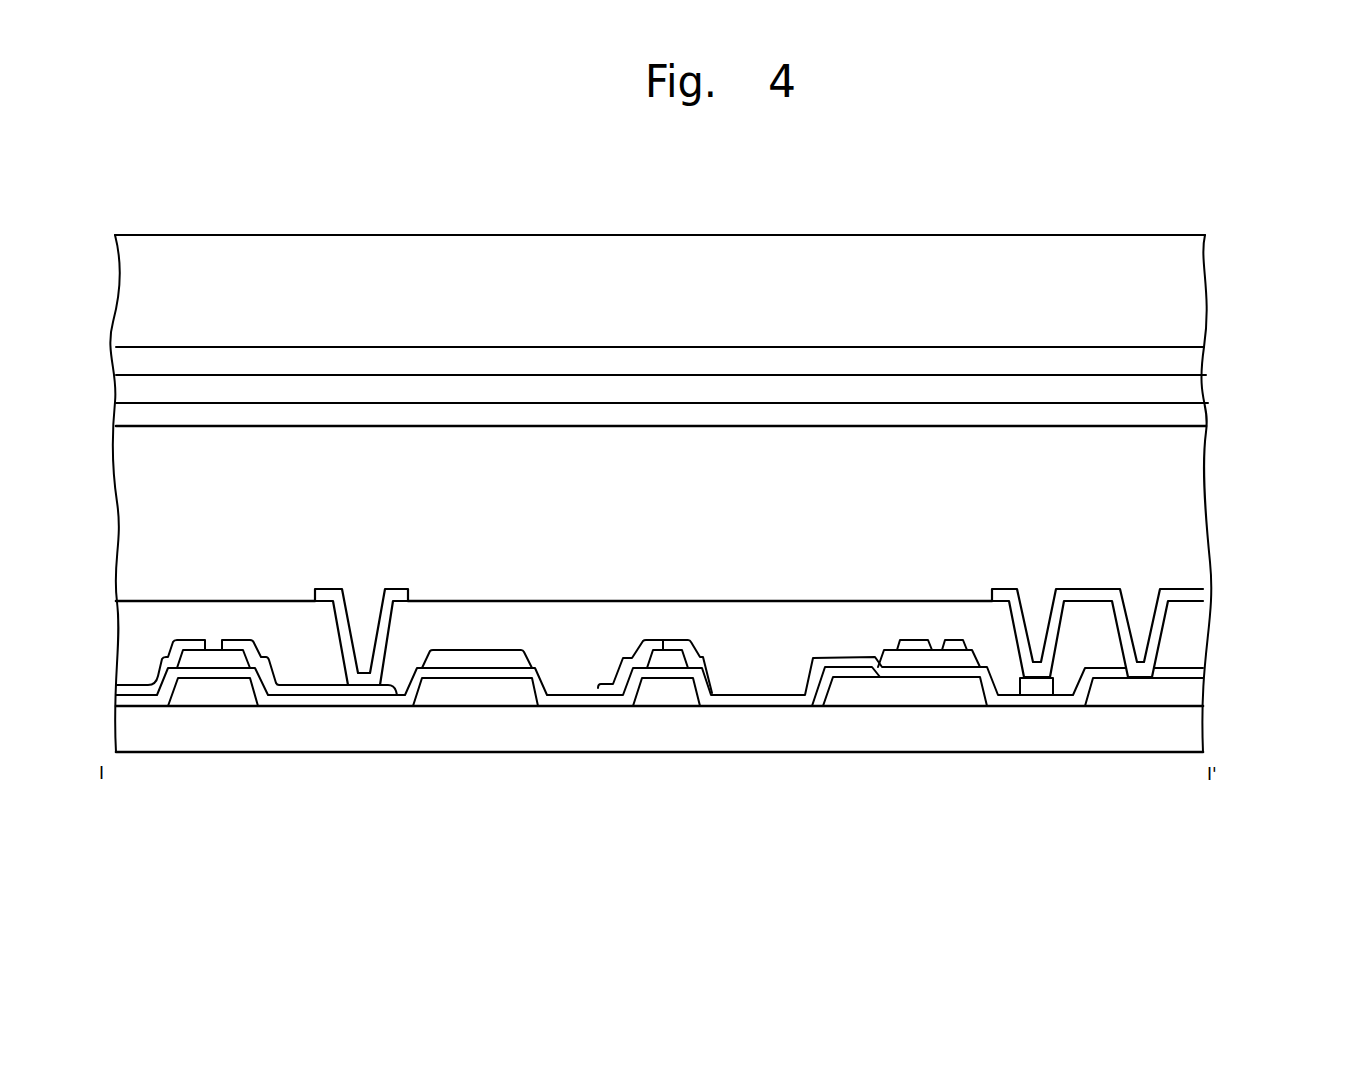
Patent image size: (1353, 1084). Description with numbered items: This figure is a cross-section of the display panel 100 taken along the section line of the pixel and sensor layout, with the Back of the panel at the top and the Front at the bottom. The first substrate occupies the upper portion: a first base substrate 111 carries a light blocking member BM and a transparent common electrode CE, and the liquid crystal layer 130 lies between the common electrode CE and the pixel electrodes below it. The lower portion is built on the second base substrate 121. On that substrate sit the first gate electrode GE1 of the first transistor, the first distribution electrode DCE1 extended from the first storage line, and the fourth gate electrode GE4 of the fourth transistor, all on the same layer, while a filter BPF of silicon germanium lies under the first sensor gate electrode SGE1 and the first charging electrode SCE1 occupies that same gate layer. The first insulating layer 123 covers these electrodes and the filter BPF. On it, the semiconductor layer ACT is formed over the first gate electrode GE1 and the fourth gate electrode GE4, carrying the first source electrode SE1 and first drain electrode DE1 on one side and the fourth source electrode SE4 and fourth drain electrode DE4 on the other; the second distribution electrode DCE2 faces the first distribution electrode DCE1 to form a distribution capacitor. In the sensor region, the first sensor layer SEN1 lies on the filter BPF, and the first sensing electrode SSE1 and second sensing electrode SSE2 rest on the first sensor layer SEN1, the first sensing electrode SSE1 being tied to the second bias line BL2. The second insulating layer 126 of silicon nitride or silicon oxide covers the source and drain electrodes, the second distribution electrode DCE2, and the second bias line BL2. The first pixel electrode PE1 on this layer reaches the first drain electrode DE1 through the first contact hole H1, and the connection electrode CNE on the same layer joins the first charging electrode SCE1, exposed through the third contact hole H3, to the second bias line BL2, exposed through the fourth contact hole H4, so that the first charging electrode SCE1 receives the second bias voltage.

The display panel 100 is at (1293, 348).
The first base substrate 111 is at (1200, 362).
The light blocking member BM is at (1200, 389).
The common electrode CE is at (1200, 414).
The liquid crystal layer 130 is at (1200, 521).
The back side direction Back is at (1172, 345).
The front side direction Front is at (1137, 755).
The connection electrode CNE is at (1200, 595).
The first pixel electrode PE1 is at (402, 594).
The second insulating layer 126 is at (1200, 634).
The first insulating layer 123 is at (1200, 672).
The second bias line BL2 is at (1200, 696).
The second base substrate 121 is at (1200, 727).
The first contact hole H1 is at (364, 600).
The third contact hole H3 is at (1037, 599).
The fourth contact hole H4 is at (1141, 599).
The first gate electrode GE1 is at (232, 695).
The semiconductor layer ACT is at (197, 657).
The first source electrode SE1 is at (138, 690).
The first drain electrode DE1 is at (297, 690).
The first distribution electrode DCE1 is at (447, 695).
The second distribution electrode DCE2 is at (497, 660).
The fourth gate electrode GE4 is at (653, 693).
The fourth drain electrode DE4 is at (608, 690).
The fourth source electrode SE4 is at (690, 657).
The first sensor gate electrode SGE1 is at (843, 673).
The filter BPF is at (882, 693).
The first sensor layer SEN1 is at (935, 658).
The second sensing electrode SSE2 is at (915, 645).
The first sensing electrode SSE1 is at (955, 645).
The first charging electrode SCE1 is at (1037, 688).